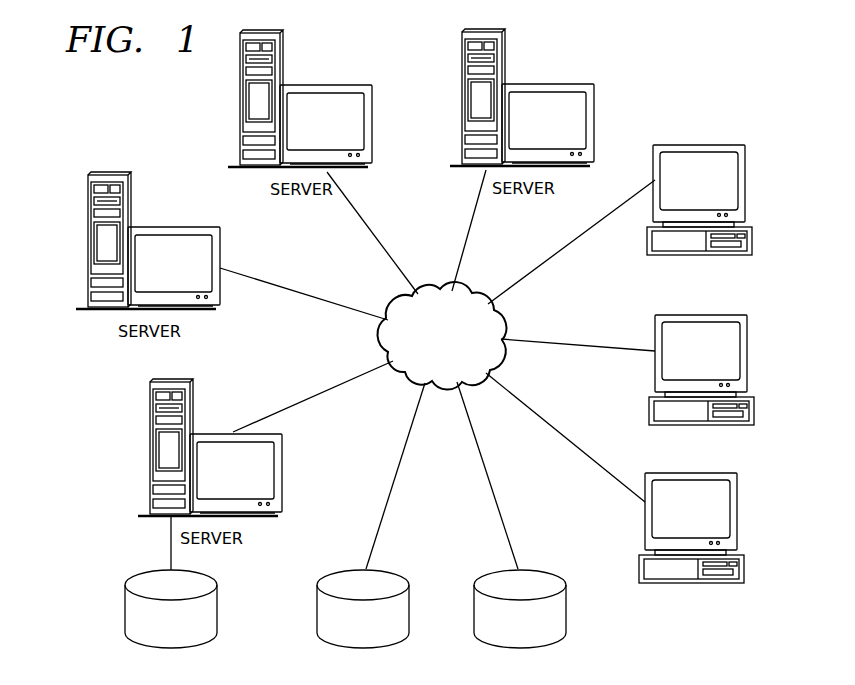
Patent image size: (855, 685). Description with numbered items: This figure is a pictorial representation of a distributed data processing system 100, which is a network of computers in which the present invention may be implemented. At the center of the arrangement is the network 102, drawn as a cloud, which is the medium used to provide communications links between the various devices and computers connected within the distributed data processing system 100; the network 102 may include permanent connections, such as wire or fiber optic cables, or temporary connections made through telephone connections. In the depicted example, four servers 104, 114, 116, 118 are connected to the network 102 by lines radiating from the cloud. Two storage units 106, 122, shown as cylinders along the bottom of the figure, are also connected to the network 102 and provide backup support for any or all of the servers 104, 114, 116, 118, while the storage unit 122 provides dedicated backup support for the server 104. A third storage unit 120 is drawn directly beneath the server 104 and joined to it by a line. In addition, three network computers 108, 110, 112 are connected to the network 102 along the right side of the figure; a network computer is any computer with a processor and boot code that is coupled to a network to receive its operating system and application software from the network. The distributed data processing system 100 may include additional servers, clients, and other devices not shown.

The distributed data processing system 100 is at (657, 107).
The network 102 is at (460, 348).
The server 104 is at (150, 449).
The storage unit 106 is at (567, 610).
The network computer 108 is at (745, 182).
The network computer 110 is at (745, 352).
The network computer 112 is at (735, 510).
The server 114 is at (88, 244).
The server 116 is at (240, 104).
The server 118 is at (462, 101).
The storage unit 120 is at (124, 607).
The storage unit 122 is at (313, 607).